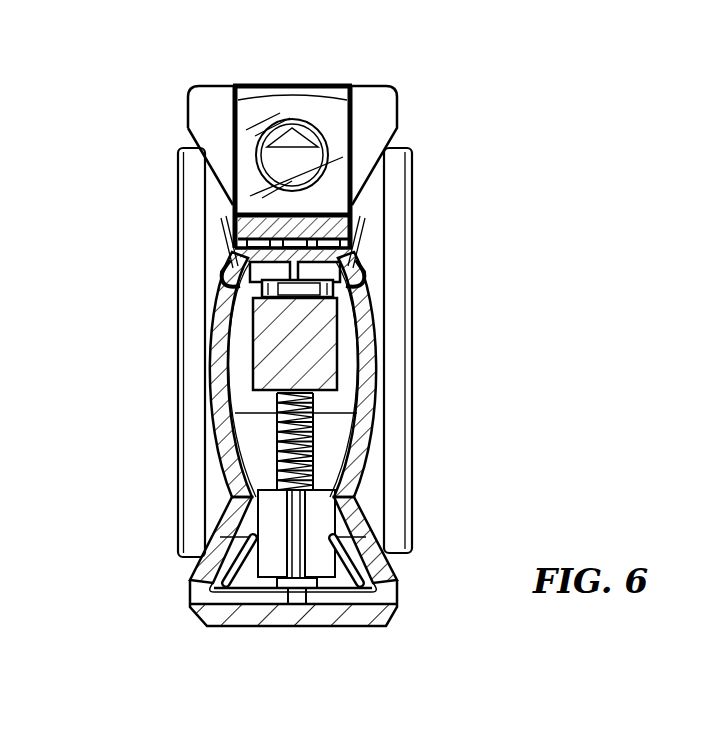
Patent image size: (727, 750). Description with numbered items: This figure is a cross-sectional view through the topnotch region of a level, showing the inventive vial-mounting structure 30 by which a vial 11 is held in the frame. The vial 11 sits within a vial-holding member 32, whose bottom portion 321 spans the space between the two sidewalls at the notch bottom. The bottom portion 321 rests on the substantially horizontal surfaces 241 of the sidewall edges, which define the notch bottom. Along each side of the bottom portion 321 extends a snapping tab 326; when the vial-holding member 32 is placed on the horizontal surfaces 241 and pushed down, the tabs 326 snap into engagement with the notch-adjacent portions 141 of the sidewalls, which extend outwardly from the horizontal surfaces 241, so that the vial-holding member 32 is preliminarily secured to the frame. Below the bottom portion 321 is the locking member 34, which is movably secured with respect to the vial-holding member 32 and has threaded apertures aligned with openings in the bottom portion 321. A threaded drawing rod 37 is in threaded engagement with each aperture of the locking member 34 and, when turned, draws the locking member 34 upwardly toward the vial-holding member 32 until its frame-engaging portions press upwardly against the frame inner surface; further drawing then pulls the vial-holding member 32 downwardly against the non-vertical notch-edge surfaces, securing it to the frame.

The vial-mounting structure 30 is at (203, 103).
The vial 11 is at (291, 108).
The vial-holding member 32 is at (233, 222).
The bottom portion 321 is at (222, 270).
The snapping tab 326 is at (228, 325).
The horizontal surface 241 is at (350, 272).
The notch-adjacent portion 141 is at (365, 285).
The locking member 34 is at (303, 347).
The threaded drawing rod 37 is at (317, 450).